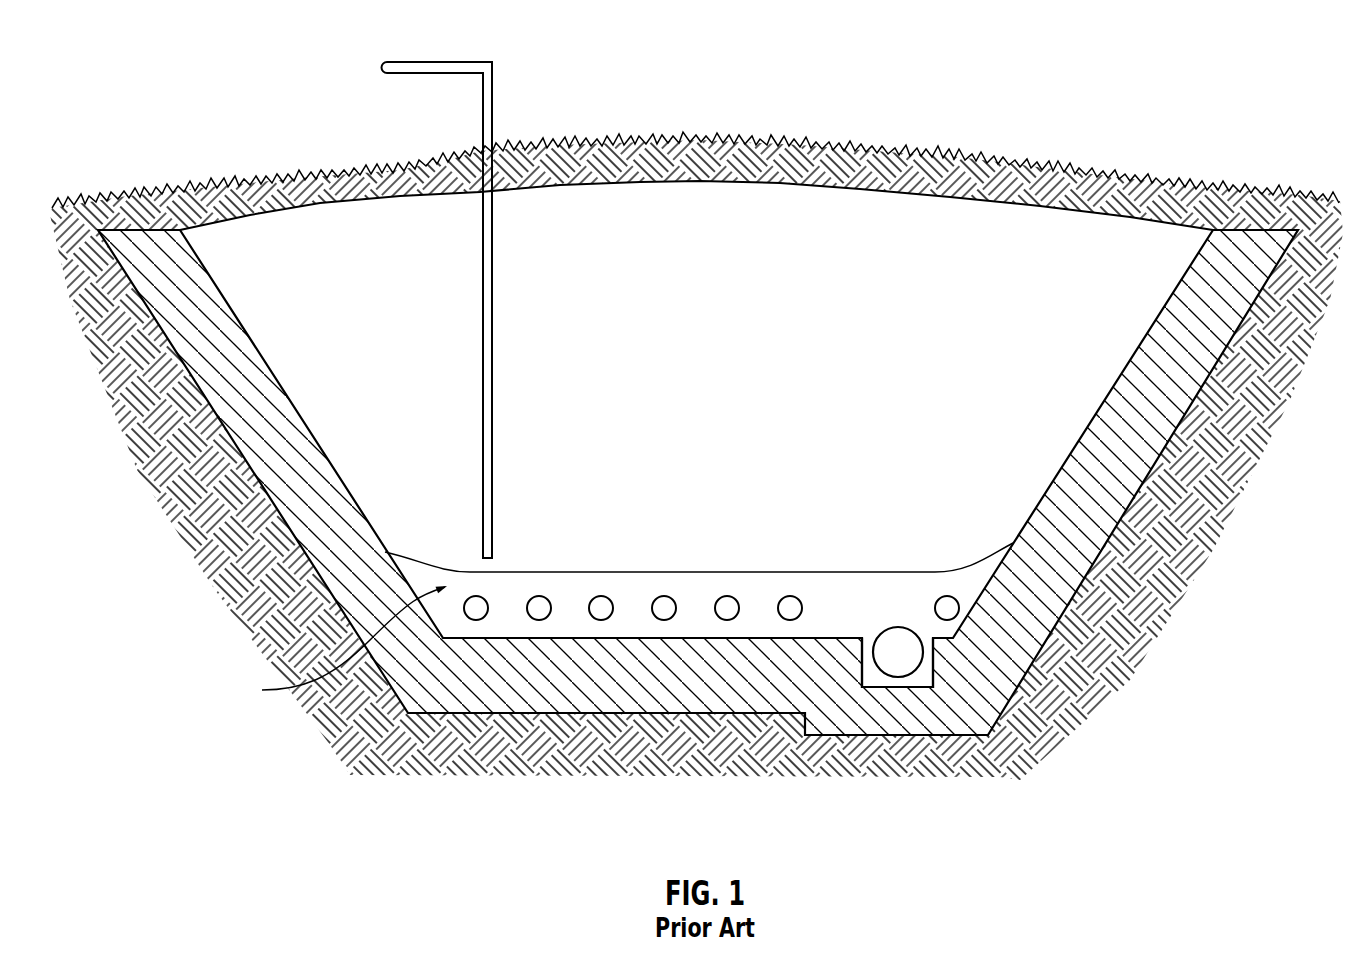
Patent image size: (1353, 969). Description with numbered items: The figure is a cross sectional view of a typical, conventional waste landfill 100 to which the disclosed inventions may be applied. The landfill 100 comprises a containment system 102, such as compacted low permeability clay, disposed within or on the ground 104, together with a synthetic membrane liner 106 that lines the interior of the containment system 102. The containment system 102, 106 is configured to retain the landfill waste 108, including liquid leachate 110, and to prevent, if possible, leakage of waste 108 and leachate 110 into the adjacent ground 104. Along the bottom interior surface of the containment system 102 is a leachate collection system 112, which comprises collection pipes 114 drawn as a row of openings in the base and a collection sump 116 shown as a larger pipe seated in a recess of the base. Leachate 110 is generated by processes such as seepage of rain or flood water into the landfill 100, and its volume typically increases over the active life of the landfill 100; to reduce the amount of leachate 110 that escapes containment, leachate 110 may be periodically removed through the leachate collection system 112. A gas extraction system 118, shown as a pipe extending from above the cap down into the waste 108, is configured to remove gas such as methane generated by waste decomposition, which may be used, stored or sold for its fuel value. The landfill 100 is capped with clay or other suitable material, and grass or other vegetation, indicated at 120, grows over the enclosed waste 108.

The waste landfill 100 is at (1040, 50).
The containment system 102 is at (717, 683).
The ground 104 is at (195, 497).
The synthetic membrane liner 106 is at (556, 628).
The landfill waste 108 is at (722, 396).
The leachate 110 is at (873, 608).
The leachate collection system 112 is at (333, 648).
The collection pipes 114 is at (476, 612).
The collection sump 116 is at (898, 655).
The gas extraction system 118 is at (485, 62).
The grass ground surface 120 is at (827, 183).